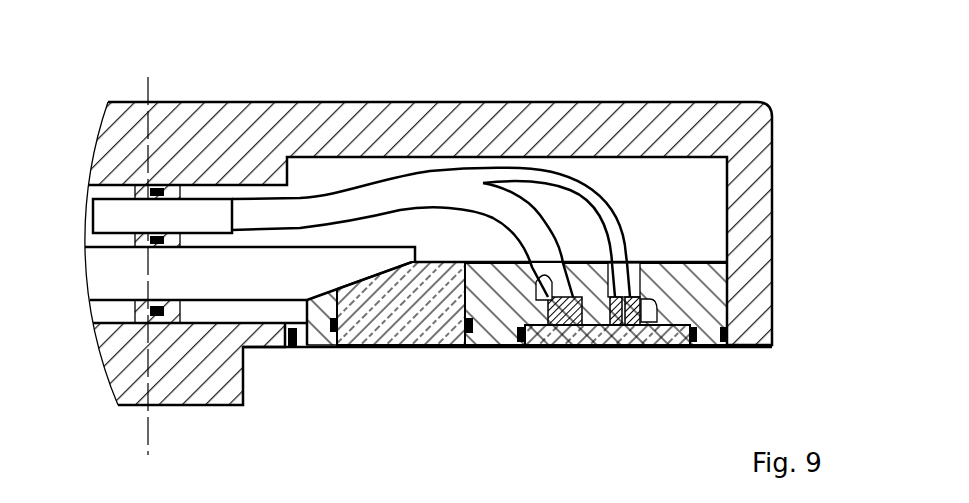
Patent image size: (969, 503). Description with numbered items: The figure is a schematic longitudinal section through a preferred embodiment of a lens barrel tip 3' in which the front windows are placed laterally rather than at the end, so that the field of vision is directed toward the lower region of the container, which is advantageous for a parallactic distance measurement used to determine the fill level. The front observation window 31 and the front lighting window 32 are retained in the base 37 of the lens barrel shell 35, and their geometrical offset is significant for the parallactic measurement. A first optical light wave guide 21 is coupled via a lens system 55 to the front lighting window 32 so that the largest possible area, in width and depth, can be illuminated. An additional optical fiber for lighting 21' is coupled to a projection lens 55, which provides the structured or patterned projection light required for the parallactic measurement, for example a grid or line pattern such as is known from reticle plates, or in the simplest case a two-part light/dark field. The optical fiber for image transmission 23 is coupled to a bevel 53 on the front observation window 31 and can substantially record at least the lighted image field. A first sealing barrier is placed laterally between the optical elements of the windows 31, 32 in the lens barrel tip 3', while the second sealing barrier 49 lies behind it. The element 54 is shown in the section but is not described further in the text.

The lens barrel tip 3' is at (428, 210).
The lens barrel shell 35 is at (670, 130).
The second sealing barrier 49 is at (148, 87).
The optical fiber for image transmission 23 is at (265, 289).
The first optical light wave guide 21 is at (333, 240).
The additional optical fiber for lighting 21' is at (468, 232).
The bevel 53 is at (378, 268).
The front observation window 31 is at (440, 328).
The base 37 is at (498, 305).
The lens system / projection lens 55 is at (541, 286).
The tube holder 54 is at (657, 313).
The front lighting window 32 is at (673, 335).